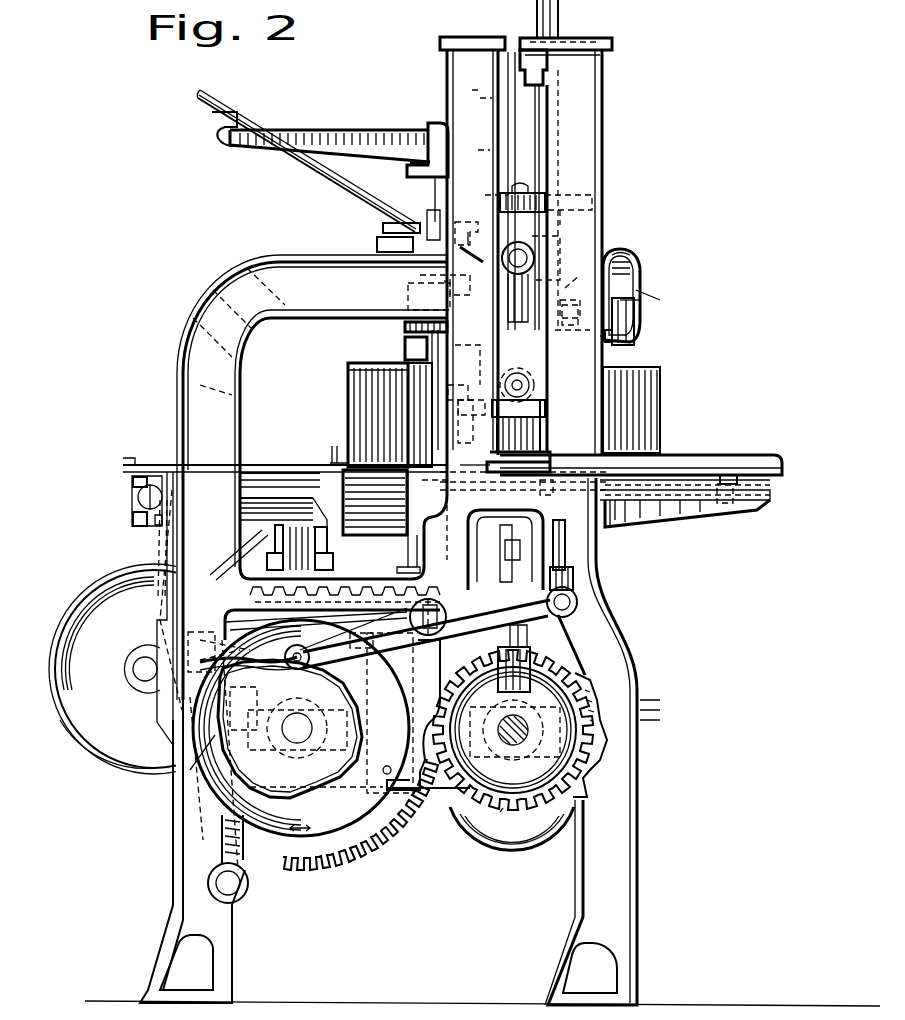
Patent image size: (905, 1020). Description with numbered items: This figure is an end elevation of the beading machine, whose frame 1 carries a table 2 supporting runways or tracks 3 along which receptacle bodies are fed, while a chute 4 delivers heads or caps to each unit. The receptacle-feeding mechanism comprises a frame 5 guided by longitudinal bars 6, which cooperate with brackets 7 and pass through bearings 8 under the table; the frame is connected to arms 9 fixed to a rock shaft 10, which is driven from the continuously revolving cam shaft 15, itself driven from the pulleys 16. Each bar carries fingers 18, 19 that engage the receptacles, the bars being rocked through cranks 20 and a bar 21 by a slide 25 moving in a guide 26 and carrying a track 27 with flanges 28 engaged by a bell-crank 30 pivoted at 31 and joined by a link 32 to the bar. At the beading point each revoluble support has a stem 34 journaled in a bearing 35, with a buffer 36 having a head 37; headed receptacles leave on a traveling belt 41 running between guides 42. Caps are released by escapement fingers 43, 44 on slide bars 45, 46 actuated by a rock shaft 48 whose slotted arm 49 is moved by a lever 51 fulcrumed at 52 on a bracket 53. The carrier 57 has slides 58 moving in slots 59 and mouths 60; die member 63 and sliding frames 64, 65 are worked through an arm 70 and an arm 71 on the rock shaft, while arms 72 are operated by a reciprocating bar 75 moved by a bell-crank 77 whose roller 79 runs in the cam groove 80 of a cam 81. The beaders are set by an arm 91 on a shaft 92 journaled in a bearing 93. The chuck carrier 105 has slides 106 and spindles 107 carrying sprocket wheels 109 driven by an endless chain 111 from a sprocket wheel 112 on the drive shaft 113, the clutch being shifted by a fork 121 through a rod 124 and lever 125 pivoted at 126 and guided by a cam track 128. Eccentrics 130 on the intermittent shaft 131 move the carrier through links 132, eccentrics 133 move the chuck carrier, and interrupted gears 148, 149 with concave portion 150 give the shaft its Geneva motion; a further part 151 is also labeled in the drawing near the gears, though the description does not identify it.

The frame 1 is at (600, 622).
The table 2 is at (730, 475).
The runways or tracks 3 is at (694, 455).
The chute 4 is at (300, 160).
The frame 5 is at (138, 497).
The longitudinal bars 6 is at (290, 465).
The brackets 7 is at (375, 538).
The bearings 8 is at (727, 505).
The arms 9 is at (120, 580).
The rock shaft 10 is at (240, 890).
The cam shaft 15 is at (290, 720).
The pulleys 16 is at (90, 740).
The finger 18 is at (443, 477).
The finger 19 is at (548, 452).
The cranks 20 is at (133, 480).
The bar 21 is at (157, 523).
The slide 25 is at (275, 545).
The guide 26 is at (267, 563).
The track 27 is at (240, 512).
The flanges 28 is at (234, 555).
The bell-crank 30 is at (163, 585).
The pivot 31 is at (133, 518).
The link 32 is at (149, 550).
The stem 34 is at (566, 545).
The bearing 35 is at (520, 535).
The buffer 36 is at (530, 645).
The head 37 is at (573, 560).
The traveling belt 41 is at (355, 538).
The guides 42 is at (335, 448).
The finger 43 is at (464, 271).
The finger 44 is at (418, 226).
The slide bar 45 is at (377, 242).
The slide bar 46 is at (466, 222).
The rock shaft 48 is at (405, 327).
The slotted arm 49 is at (400, 610).
The lever 51 is at (290, 592).
The fulcrum 52 is at (198, 632).
The bracket 53 is at (160, 668).
The carrier 57 is at (605, 354).
The slides 58 is at (542, 400).
The slots 59 is at (500, 158).
The mouths 60 is at (572, 316).
The die member 63 is at (535, 380).
The sliding frame 64 is at (457, 381).
The sliding frame 65 is at (470, 380).
The arm 70 is at (476, 421).
The arm 71 is at (385, 412).
The arms 72 is at (636, 336).
The reciprocating bar 75 is at (638, 272).
The bell-crank 77 is at (660, 300).
The roller or projection 79 is at (636, 312).
The cam groove 80 is at (628, 258).
The cam 81 is at (640, 300).
The arm 91 is at (408, 290).
The shaft 92 is at (414, 552).
The bearing 93 is at (420, 348).
The chuck carrier 105 is at (588, 280).
The slides 106 is at (545, 250).
The spindles 107 is at (520, 186).
The sprocket wheels 109 is at (488, 192).
The endless chain 111 is at (508, 193).
The sprocket wheel 112 is at (565, 196).
The drive shaft 113 is at (559, 20).
The fork 121 is at (276, 620).
The rod 124 is at (600, 532).
The lever 125 is at (577, 605).
The pivot 126 is at (438, 600).
The groove or track 128 is at (193, 780).
The eccentrics 130 is at (522, 783).
The shaft 131 is at (605, 722).
The links 132 is at (535, 268).
The eccentrics 133 is at (502, 840).
The interrupted gear 148 is at (330, 868).
The interrupted gear 149 is at (503, 810).
The concave portion 150 is at (500, 747).
The arm 151 is at (425, 730).